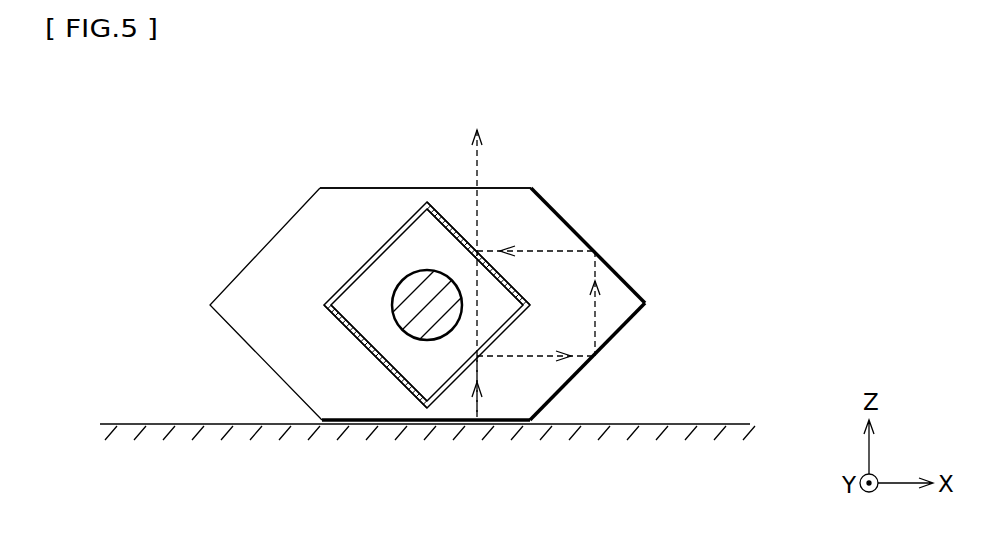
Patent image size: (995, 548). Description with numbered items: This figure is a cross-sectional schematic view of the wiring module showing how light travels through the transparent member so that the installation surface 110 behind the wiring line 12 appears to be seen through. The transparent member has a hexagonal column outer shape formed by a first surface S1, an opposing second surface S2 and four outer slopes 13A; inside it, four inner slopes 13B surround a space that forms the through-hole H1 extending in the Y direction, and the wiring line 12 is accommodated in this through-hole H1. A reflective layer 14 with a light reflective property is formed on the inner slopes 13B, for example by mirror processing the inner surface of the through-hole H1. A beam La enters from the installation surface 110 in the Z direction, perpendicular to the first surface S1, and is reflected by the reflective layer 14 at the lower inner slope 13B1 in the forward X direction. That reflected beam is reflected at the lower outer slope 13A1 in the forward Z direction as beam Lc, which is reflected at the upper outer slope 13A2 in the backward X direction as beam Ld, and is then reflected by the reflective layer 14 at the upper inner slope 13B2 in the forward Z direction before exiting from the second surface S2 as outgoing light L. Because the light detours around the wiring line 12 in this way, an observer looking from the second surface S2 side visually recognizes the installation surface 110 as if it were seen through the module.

The wiring line 12 is at (363, 266).
The reflective layer 14 is at (343, 324).
The slopes 13A is at (649, 304).
The slope on lower side 13A1 is at (618, 332).
The slope on upper side 13A2 is at (618, 274).
The slopes 13B is at (425, 305).
The slope on lower side 13B1 is at (478, 330).
The slope on upper side 13B2 is at (481, 277).
The first surface S1 is at (360, 426).
The second surface S2 is at (336, 188).
The through-hole H1 is at (410, 259).
The installation surface 110 is at (693, 424).
The outgoing light L is at (480, 158).
The reflected beam Ld is at (536, 292).
The reflected beam Lc is at (608, 303).
The beam La is at (491, 386).